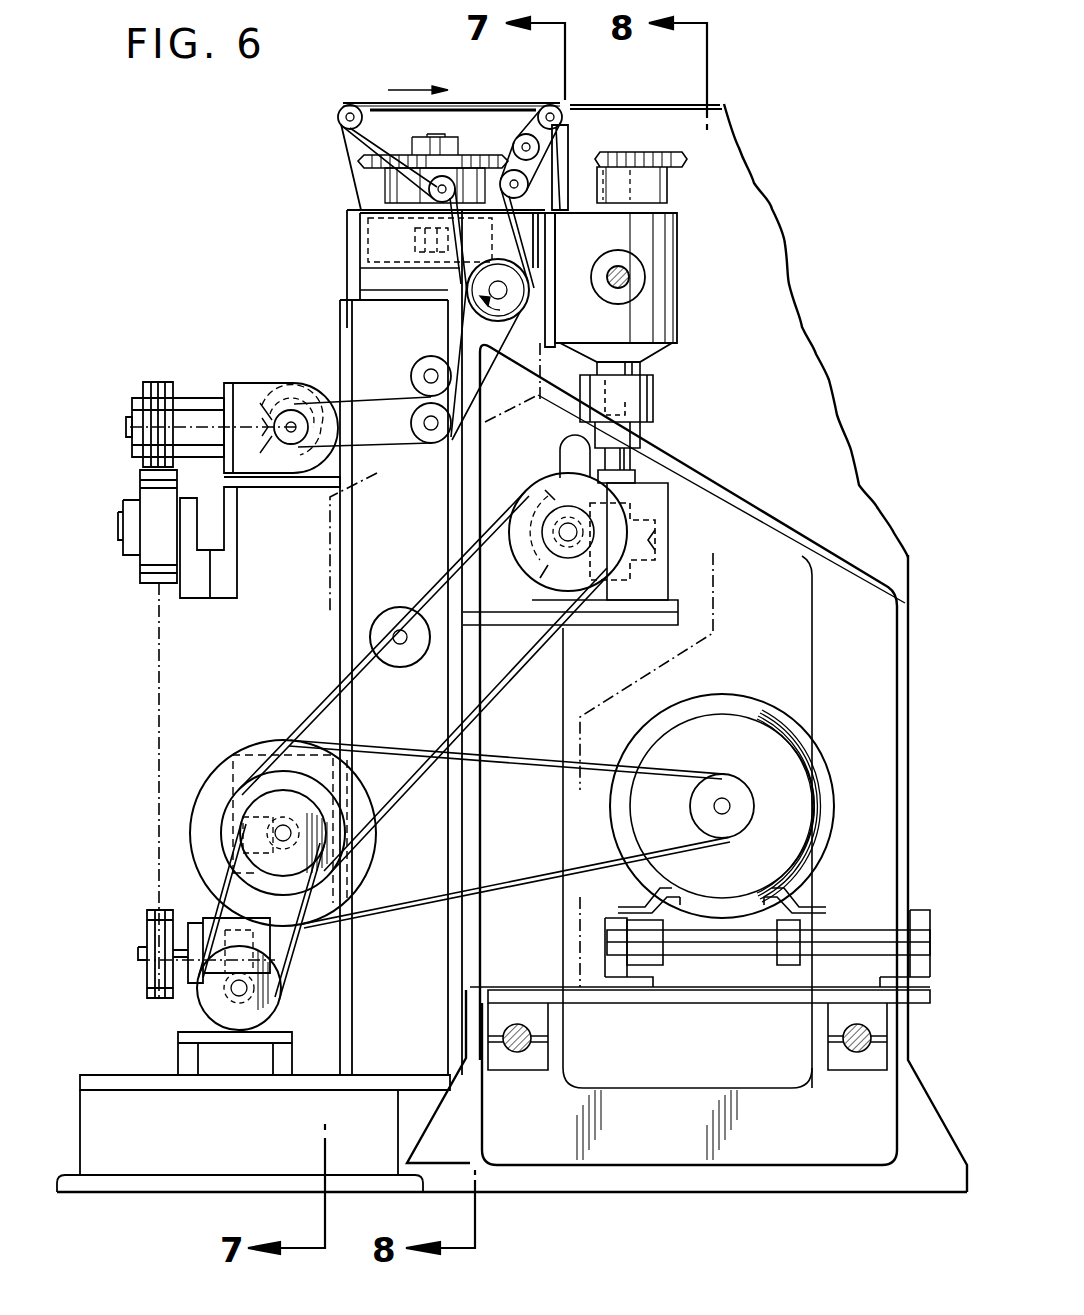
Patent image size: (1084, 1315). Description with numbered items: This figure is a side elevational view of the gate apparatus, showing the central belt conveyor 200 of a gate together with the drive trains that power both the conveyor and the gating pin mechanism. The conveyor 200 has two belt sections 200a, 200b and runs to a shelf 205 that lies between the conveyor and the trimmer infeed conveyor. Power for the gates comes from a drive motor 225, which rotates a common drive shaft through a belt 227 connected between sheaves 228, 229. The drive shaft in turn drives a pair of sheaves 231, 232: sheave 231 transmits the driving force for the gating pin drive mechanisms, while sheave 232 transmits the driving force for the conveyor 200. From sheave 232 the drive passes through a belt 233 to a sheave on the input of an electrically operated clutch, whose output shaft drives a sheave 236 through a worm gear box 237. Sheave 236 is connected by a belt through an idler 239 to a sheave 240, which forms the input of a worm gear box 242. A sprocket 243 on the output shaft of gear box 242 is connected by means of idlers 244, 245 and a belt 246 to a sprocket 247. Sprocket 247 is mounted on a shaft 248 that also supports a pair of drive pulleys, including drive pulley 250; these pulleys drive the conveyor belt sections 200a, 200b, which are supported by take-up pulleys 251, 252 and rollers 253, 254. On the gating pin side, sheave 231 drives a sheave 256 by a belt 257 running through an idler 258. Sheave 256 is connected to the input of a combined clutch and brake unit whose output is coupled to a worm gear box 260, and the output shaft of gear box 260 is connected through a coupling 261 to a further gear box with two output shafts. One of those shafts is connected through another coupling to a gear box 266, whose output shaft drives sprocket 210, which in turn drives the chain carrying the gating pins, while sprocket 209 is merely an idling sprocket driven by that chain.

The central belt conveyor 200 is at (385, 104).
The conveyor belt section 200a is at (535, 231).
The conveyor belt section 200b is at (490, 217).
The shelf 205 is at (620, 103).
The sprocket 209 is at (360, 163).
The sprocket 210 is at (640, 140).
The drive motor 225 is at (772, 746).
The belt 227 is at (540, 762).
The sheave 228 is at (737, 822).
The sheave 229 is at (226, 757).
The sheave 231 is at (322, 776).
The sheave 232 is at (248, 816).
The belt 233 is at (272, 970).
The sheave 236 is at (143, 922).
The worm gear box 237 is at (205, 918).
The idler 239 is at (145, 472).
The sheave 240 is at (150, 385).
The worm gear box 242 is at (266, 382).
The sprocket 243 is at (291, 446).
The idler 244 is at (422, 360).
The idler 245 is at (425, 440).
The belt 246 is at (477, 417).
The sprocket 247 is at (518, 299).
The shaft 248 is at (490, 277).
The drive pulley 250 is at (490, 248).
The take-up pulley 251 is at (600, 178).
The take-up pulley 252 is at (518, 137).
The roller 253 is at (338, 117).
The roller 254 is at (551, 104).
The sheave 256 is at (547, 488).
The belt 257 is at (432, 568).
The idler 258 is at (420, 658).
The worm gear box 260 is at (650, 493).
The coupling 261 is at (640, 400).
The gear box 266 is at (678, 330).